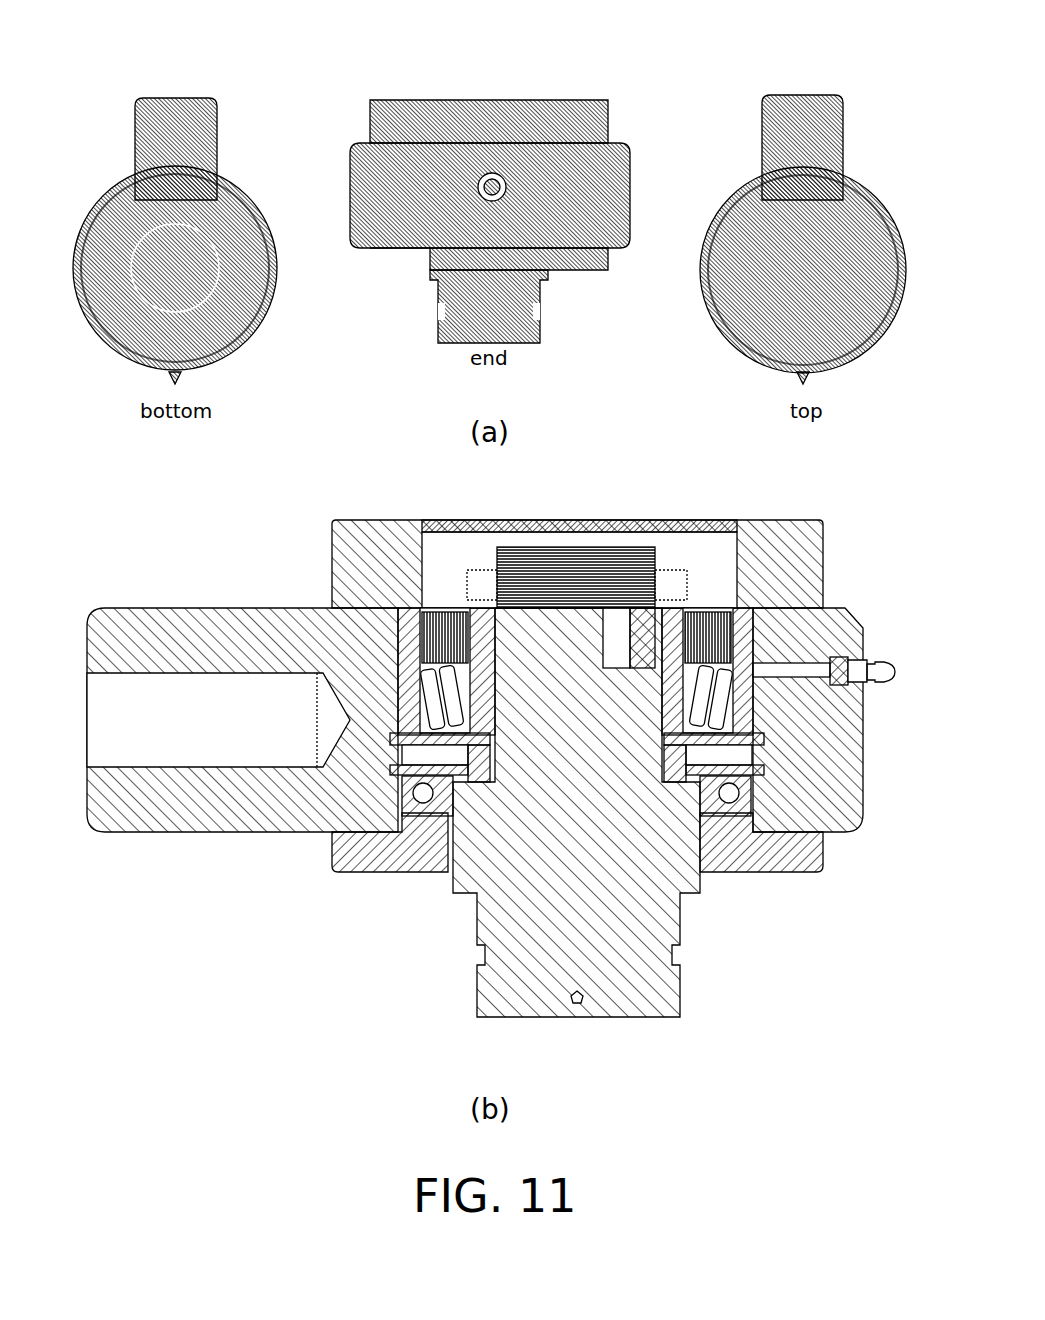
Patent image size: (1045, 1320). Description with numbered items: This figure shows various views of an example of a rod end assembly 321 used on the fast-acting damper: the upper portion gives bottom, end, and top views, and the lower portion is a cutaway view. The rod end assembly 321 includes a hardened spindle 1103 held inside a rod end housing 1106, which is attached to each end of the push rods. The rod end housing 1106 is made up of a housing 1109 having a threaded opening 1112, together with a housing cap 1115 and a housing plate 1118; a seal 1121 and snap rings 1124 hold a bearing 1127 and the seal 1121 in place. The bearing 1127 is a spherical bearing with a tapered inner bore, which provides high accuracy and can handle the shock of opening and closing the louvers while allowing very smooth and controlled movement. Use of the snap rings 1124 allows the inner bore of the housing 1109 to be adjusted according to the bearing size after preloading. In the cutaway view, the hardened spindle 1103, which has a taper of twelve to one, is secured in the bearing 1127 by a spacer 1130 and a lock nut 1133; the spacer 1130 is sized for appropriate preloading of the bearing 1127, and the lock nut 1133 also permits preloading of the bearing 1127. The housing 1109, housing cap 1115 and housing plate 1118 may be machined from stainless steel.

The rod end assembly 321 is at (486, 55).
The hardened spindle 1103 is at (452, 334).
The rod end housing 1106 is at (210, 94).
The housing 1109 is at (353, 228).
The threaded opening 1112 is at (489, 200).
The housing cap 1115 is at (743, 227).
The housing plate 1118 is at (413, 265).
The seal 1121 is at (746, 776).
The snap rings 1124 is at (762, 746).
The bearing 1127 is at (742, 628).
The spacer 1130 is at (676, 783).
The lock nut 1133 is at (677, 568).